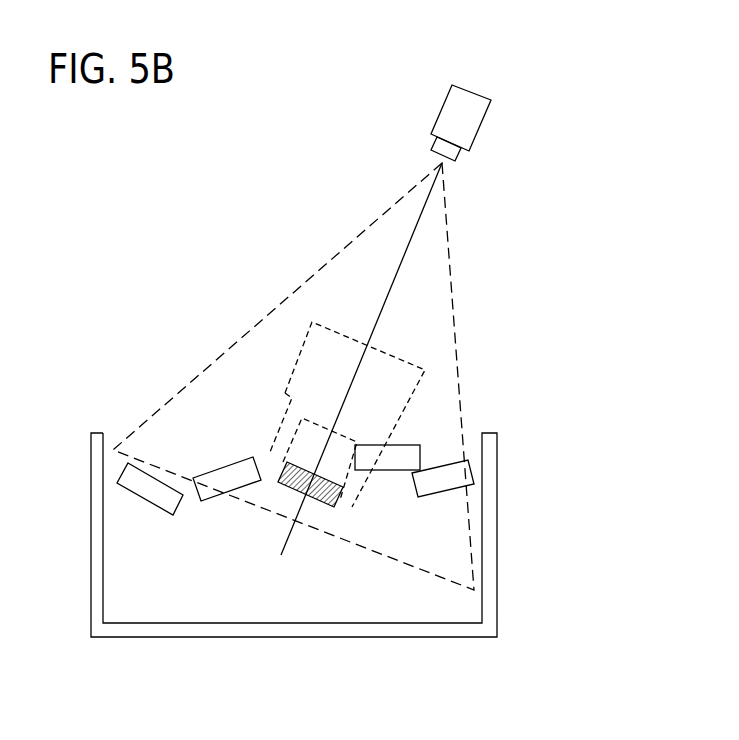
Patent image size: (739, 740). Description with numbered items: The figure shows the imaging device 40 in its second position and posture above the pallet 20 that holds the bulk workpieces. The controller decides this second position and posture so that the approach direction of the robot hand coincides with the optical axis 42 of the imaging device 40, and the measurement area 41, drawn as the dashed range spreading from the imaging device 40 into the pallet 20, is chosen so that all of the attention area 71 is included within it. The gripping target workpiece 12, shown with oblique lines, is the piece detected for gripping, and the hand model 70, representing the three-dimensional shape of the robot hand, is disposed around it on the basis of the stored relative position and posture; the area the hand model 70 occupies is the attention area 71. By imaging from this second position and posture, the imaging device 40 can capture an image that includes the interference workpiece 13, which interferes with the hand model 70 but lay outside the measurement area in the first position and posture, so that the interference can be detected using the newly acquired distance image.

The gripping target workpiece 12 is at (279, 486).
The interference workpiece 13 is at (390, 472).
The pallet 20 is at (418, 638).
The imaging device 40 is at (446, 100).
The measurement area 41 is at (230, 345).
The optical axis 42 is at (386, 292).
The hand model 70 is at (417, 338).
The attention area 71 is at (364, 404).